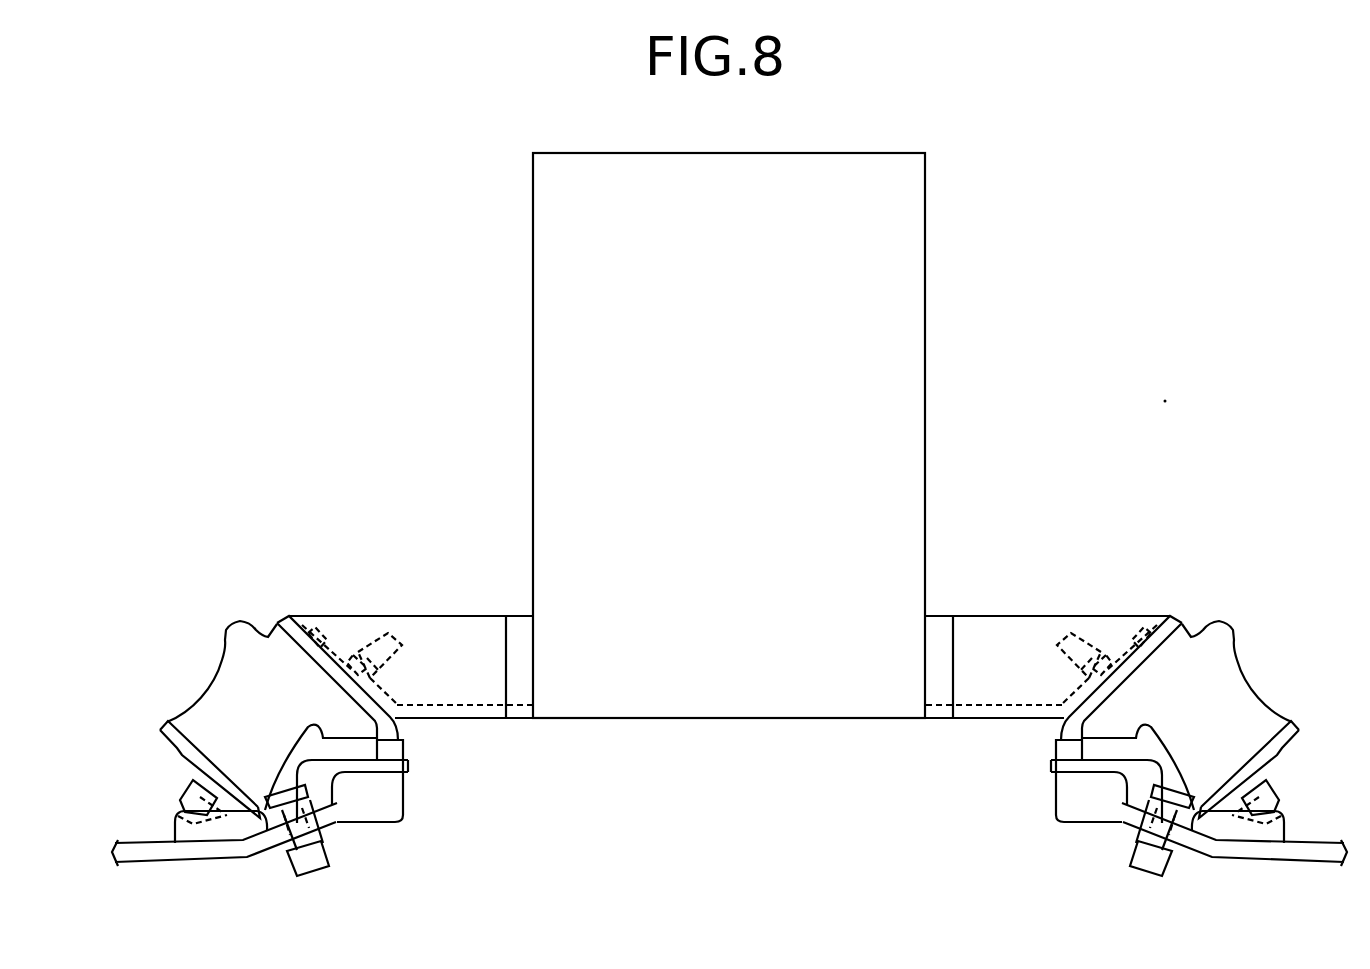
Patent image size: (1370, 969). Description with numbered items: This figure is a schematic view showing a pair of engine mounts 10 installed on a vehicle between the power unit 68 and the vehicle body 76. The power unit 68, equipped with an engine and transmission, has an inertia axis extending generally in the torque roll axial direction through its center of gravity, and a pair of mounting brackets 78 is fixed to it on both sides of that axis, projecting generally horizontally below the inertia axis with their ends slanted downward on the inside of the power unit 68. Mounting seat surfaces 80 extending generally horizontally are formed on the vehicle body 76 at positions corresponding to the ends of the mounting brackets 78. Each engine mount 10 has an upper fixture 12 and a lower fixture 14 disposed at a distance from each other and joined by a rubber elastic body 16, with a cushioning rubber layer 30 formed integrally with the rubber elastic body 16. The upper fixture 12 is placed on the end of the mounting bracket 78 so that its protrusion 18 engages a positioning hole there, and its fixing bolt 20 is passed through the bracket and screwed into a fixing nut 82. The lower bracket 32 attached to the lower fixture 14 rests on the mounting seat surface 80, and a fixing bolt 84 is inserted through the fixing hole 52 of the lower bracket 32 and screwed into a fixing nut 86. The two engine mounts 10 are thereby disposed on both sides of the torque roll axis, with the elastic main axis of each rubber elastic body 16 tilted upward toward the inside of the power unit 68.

The engine mount 10 is at (240, 572).
The upper fixture 12 is at (332, 672).
The lower fixture 14 is at (172, 740).
The rubber elastic body 16 is at (226, 684).
The protrusion 18 is at (324, 616).
The fixing bolt 20 is at (390, 637).
The cushioning rubber layer 30 is at (388, 800).
The lower bracket 32 is at (225, 830).
The fixing hole 52 is at (325, 856).
The power unit 68 is at (880, 200).
The vehicle body 76 is at (139, 822).
The mounting bracket 78 is at (484, 634).
The mounting seat surface 80 is at (164, 852).
The fixing nut 82 is at (352, 650).
The fixing bolt 84 is at (265, 833).
The fixing nut 86 is at (306, 876).